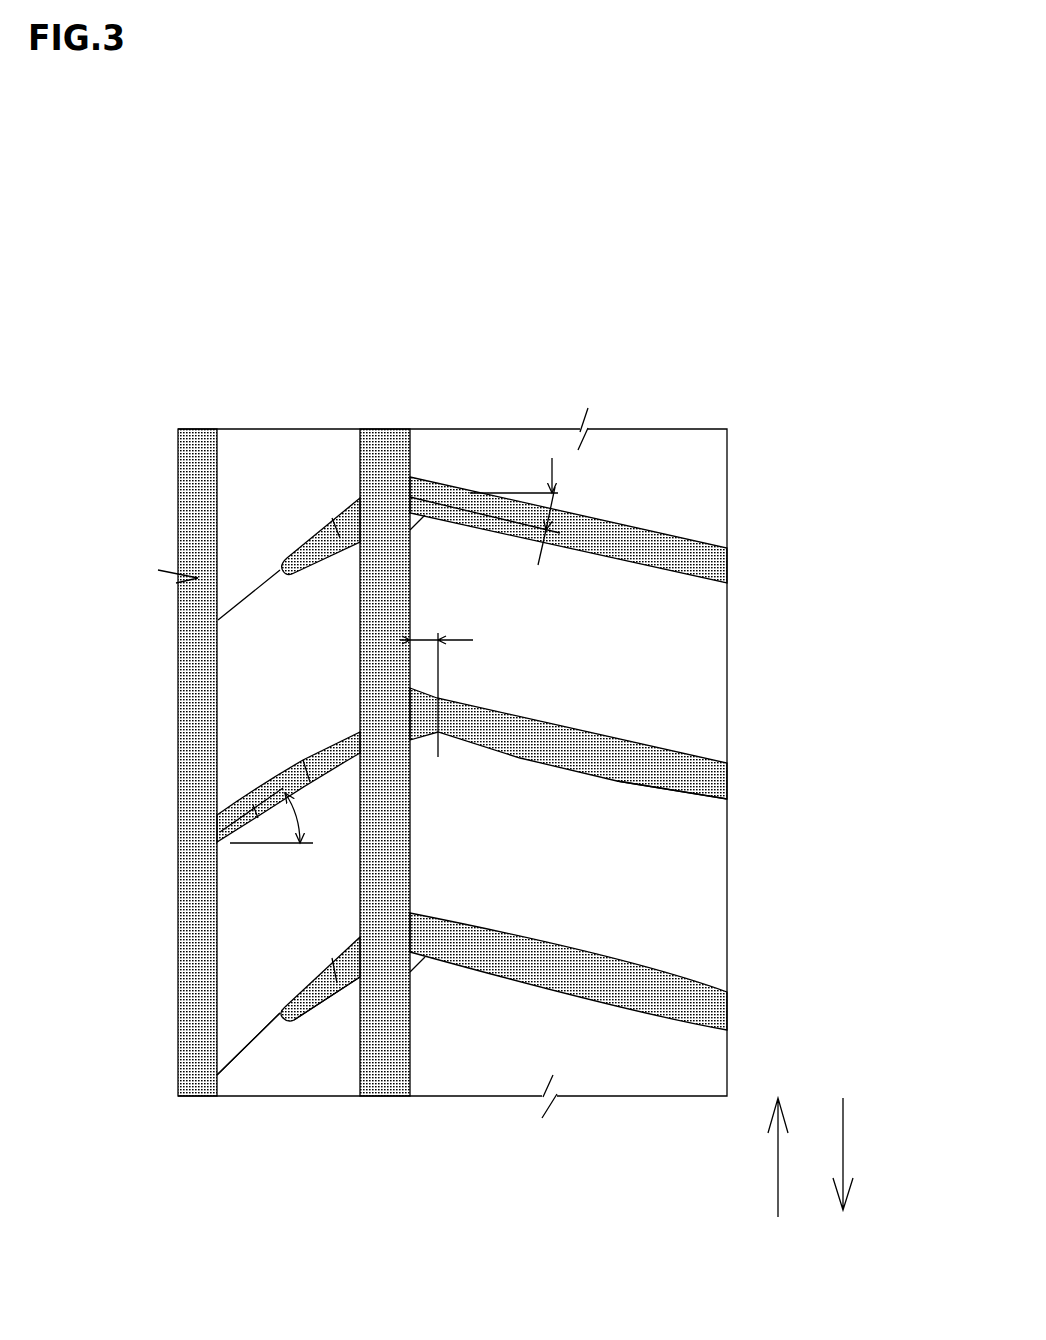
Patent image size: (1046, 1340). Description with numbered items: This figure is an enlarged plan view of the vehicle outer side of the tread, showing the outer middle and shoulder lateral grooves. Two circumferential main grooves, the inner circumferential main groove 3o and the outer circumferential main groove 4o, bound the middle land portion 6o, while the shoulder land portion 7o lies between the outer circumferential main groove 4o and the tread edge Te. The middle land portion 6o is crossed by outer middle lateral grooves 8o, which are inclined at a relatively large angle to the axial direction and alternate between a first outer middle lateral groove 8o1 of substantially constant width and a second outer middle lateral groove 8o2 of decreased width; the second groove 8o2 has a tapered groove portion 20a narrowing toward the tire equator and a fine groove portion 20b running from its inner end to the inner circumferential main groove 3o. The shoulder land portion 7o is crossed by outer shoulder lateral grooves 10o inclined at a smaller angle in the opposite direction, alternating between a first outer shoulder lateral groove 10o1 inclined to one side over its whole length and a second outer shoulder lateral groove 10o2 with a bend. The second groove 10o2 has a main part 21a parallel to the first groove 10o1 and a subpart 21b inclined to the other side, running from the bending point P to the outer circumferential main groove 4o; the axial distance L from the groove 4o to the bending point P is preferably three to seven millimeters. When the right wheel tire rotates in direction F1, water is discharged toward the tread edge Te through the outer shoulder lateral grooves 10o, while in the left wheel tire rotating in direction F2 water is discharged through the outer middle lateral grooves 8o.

The inner circumferential main groove 3o is at (193, 445).
The outer circumferential main groove 4o is at (378, 445).
The middle land portion 6o is at (292, 412).
The shoulder land portion 7o is at (515, 412).
The outer middle lateral groove 8o is at (203, 864).
The first outer middle lateral groove 8o1 is at (237, 800).
The second outer middle lateral groove 8o2 is at (267, 1010).
The outer shoulder lateral groove 10o is at (651, 638).
The first outer shoulder lateral groove 10o1 is at (655, 533).
The second outer shoulder lateral groove 10o2 is at (613, 740).
The tapered groove portion 20a is at (307, 1007).
The fine groove portion 20b is at (242, 1052).
The main part 21a is at (617, 780).
The subpart 21b is at (410, 740).
The tread edge Te is at (727, 468).
The bending point P is at (443, 692).
The axial distance L is at (436, 683).
The tire rotation direction F1 is at (781, 1173).
The rotation direction F2 is at (846, 1173).